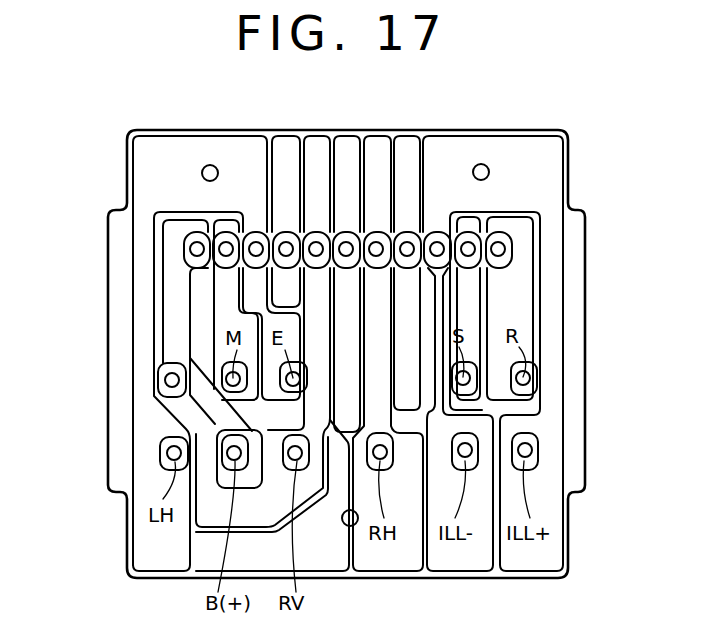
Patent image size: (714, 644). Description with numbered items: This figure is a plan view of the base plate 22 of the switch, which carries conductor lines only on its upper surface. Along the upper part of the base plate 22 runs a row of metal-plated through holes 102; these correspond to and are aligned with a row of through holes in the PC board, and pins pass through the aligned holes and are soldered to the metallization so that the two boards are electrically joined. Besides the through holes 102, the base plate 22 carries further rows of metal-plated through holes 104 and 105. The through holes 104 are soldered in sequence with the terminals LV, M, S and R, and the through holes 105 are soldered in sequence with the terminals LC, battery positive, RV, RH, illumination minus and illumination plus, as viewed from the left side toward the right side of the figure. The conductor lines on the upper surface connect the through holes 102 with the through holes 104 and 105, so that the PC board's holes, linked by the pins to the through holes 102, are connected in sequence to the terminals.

The base plate 22 is at (575, 134).
The metal-plated through holes 102 is at (178, 255).
The metal-plated through holes 104 is at (154, 391).
The metal-plated through holes 105 is at (162, 455).